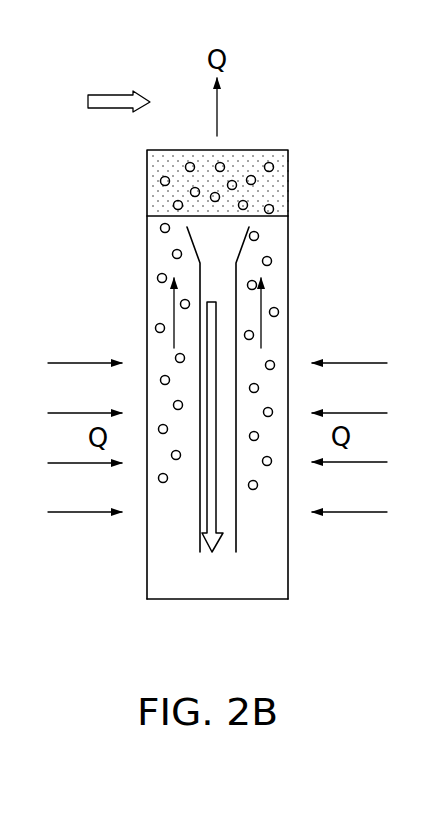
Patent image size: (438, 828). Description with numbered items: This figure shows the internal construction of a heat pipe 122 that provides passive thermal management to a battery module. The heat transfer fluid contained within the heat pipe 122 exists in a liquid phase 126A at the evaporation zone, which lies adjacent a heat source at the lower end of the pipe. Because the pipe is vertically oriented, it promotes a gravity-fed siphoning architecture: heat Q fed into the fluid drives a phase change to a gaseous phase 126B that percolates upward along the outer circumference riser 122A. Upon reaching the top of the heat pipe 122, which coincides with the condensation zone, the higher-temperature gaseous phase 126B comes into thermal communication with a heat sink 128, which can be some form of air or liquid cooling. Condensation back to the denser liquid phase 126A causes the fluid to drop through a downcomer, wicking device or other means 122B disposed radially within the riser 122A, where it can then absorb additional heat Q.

The heat sink 128 is at (104, 93).
The heat pipe 122 is at (105, 262).
The gaseous phase 126B is at (282, 185).
The riser 122A is at (262, 321).
The downcomer 122B is at (212, 483).
The liquid phase 126A is at (198, 580).